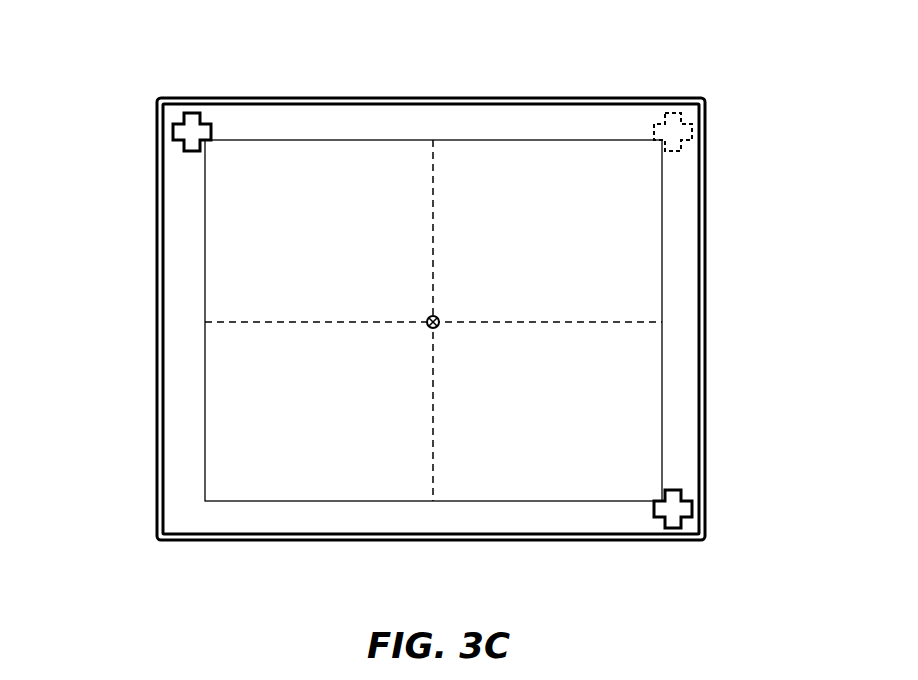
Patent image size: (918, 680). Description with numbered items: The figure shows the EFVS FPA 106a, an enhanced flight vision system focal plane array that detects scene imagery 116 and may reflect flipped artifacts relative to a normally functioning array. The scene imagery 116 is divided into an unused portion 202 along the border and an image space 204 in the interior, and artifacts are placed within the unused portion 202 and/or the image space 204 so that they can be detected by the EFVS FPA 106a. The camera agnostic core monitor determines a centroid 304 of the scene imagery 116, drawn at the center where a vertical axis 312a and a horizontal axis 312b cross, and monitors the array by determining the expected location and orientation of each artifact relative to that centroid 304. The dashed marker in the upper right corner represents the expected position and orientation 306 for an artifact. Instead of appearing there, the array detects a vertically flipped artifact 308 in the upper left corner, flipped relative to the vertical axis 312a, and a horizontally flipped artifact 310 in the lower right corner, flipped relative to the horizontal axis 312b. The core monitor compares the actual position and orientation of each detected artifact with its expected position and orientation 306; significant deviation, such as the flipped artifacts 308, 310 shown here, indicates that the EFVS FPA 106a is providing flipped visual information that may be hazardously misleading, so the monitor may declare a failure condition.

The EFVS FPA 106a is at (108, 72).
The scene imagery 116 is at (251, 541).
The unused portion 202 is at (680, 210).
The image space 204 is at (632, 300).
The centroid 304 is at (427, 319).
The expected position and orientation 306 is at (675, 122).
The vertically flipped artifact 308 is at (193, 123).
The horizontally flipped artifact 310 is at (688, 507).
The vertical axis 312a is at (436, 428).
The horizontal axis 312b is at (585, 322).